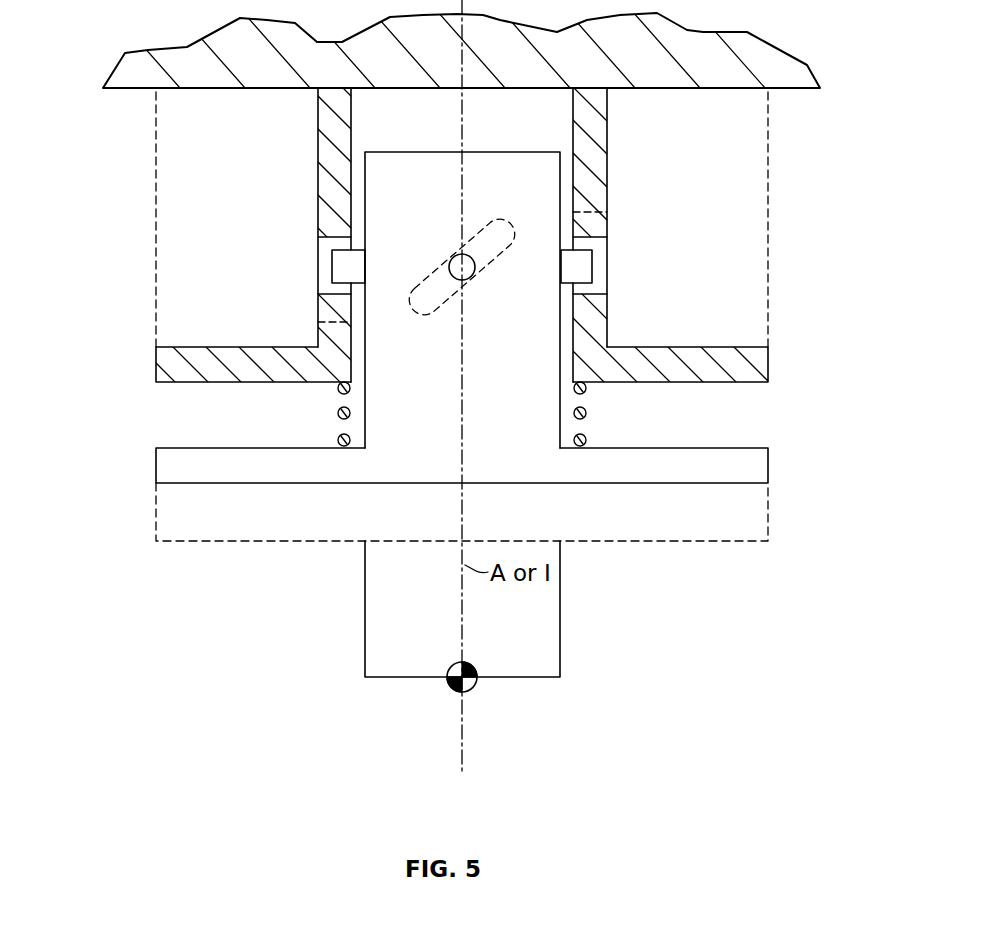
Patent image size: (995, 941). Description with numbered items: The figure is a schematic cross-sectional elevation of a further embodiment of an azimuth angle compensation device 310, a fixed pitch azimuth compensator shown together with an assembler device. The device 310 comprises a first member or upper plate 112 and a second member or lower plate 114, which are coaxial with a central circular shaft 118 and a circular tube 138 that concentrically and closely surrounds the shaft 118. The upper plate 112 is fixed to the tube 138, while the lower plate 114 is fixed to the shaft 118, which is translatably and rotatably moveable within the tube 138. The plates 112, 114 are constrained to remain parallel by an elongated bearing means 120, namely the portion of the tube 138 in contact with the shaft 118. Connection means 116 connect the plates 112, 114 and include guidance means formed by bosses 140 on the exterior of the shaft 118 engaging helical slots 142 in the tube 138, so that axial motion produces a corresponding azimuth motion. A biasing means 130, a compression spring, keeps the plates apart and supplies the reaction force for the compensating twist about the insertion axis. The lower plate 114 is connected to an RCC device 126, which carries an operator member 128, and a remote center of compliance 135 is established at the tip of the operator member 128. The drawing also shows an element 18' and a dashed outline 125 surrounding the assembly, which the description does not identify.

The wall member 18' is at (441, 77).
The housing outline 125 is at (750, 152).
The circular tube 138 is at (597, 160).
The elongated bearing means 120 is at (573, 133).
The first member (upper plate) 112 is at (748, 370).
The bosses 140 is at (338, 264).
The helical slots 142 is at (327, 294).
The central circular shaft 118 is at (400, 412).
The biasing means 130 is at (587, 413).
The second member (lower plate) 114 is at (753, 467).
The RCC device 126 is at (725, 516).
The operator member 128 is at (550, 648).
The remote center of compliance 135 is at (478, 694).
The connection means 116 is at (120, 382).
The azimuth compensation device 310 is at (893, 256).